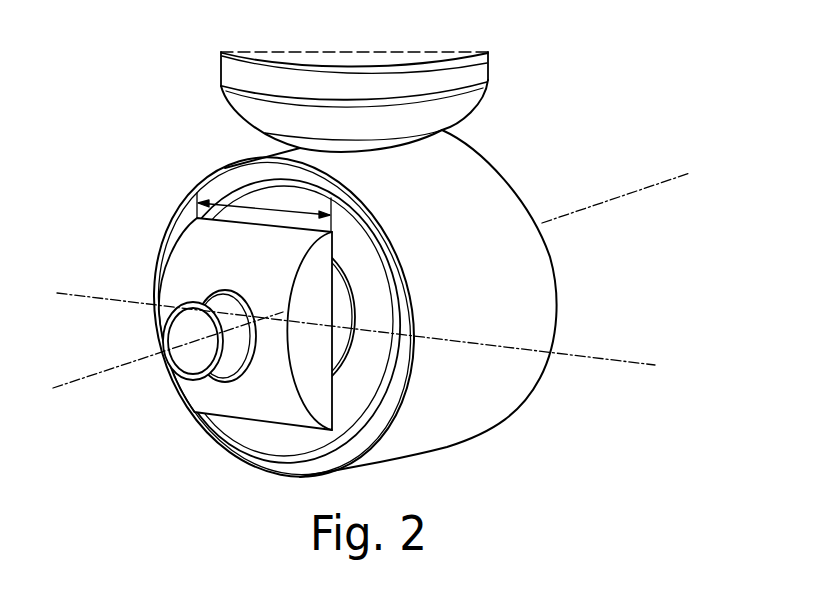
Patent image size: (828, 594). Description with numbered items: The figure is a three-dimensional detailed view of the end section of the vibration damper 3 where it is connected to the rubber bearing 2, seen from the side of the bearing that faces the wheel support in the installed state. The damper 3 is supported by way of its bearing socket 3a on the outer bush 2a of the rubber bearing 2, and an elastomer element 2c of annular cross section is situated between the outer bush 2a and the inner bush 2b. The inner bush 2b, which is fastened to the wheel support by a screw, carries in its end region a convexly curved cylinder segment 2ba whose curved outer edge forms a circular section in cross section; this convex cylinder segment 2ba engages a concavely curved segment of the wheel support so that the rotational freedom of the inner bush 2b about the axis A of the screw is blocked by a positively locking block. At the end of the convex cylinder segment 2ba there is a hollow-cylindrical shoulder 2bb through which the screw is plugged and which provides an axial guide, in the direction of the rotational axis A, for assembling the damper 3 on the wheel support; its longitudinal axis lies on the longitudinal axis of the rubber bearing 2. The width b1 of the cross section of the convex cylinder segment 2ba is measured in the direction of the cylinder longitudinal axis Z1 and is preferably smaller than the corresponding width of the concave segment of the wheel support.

The rubber bearing 2 is at (232, 442).
The outer bush 2a is at (285, 318).
The elastomer element 2c is at (245, 203).
The inner bush 2b is at (347, 355).
The convexly curved cylinder segment 2ba is at (190, 256).
The hollow-cylindrical shoulder 2bb is at (185, 358).
The width of the cross section of the convex cylinder segment b1 is at (206, 201).
The vibration damper 3 is at (482, 65).
The bearing socket 3a is at (507, 193).
The cylinder longitudinal axis Z1 is at (373, 341).
The axis A is at (374, 271).